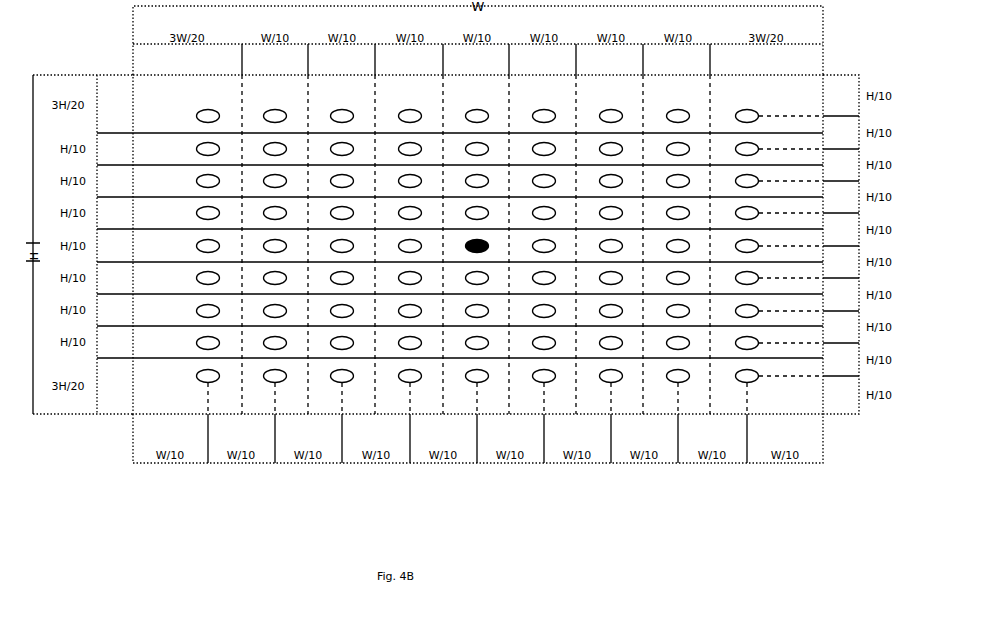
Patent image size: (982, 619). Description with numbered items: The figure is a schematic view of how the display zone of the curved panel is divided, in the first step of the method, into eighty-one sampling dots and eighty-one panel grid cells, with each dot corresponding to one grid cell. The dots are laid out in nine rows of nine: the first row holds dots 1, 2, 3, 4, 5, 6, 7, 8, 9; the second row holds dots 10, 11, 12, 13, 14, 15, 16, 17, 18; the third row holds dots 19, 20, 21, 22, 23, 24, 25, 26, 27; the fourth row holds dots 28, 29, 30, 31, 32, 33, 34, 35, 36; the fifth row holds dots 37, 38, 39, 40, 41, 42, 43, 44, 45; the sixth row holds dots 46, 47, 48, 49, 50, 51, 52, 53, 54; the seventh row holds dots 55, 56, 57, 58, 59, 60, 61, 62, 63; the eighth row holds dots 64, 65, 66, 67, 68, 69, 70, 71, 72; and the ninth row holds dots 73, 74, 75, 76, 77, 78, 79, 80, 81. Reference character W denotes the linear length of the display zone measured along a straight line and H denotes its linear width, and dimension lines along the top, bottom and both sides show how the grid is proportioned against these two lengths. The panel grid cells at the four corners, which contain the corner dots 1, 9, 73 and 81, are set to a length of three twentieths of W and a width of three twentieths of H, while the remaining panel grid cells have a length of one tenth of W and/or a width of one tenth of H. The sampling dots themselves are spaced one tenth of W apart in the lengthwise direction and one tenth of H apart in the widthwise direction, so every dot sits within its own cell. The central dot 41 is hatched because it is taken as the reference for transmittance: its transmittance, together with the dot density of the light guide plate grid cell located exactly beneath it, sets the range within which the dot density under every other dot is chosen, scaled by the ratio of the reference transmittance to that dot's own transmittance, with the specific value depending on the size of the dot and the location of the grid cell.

The dot 1 is at (178, 99).
The dot 2 is at (266, 99).
The dot 3 is at (333, 99).
The dot 4 is at (400, 99).
The dot 5 is at (468, 99).
The dot 6 is at (534, 99).
The dot 7 is at (601, 99).
The dot 8 is at (668, 99).
The dot 9 is at (736, 99).
The dot 10 is at (178, 145).
The dot 11 is at (266, 145).
The dot 12 is at (333, 145).
The dot 13 is at (400, 145).
The dot 14 is at (468, 145).
The dot 15 is at (534, 145).
The dot 16 is at (601, 145).
The dot 17 is at (668, 145).
The dot 18 is at (736, 145).
The dot 19 is at (178, 177).
The dot 20 is at (266, 177).
The dot 21 is at (333, 177).
The dot 22 is at (400, 177).
The dot 23 is at (468, 177).
The dot 24 is at (534, 177).
The dot 25 is at (601, 177).
The dot 26 is at (668, 177).
The dot 27 is at (736, 177).
The dot 28 is at (178, 209).
The dot 29 is at (266, 209).
The dot 30 is at (333, 209).
The dot 31 is at (400, 209).
The dot 32 is at (468, 209).
The dot 33 is at (534, 209).
The dot 34 is at (601, 209).
The dot 35 is at (668, 209).
The dot 36 is at (736, 209).
The dot 37 is at (178, 241).
The dot 38 is at (266, 241).
The dot 39 is at (333, 241).
The dot 40 is at (400, 241).
The central dot 41 is at (468, 241).
The dot 42 is at (534, 241).
The dot 43 is at (601, 241).
The dot 44 is at (668, 241).
The dot 45 is at (736, 241).
The dot 46 is at (178, 274).
The dot 47 is at (266, 274).
The dot 48 is at (333, 274).
The dot 49 is at (400, 274).
The dot 50 is at (468, 274).
The dot 51 is at (534, 274).
The dot 52 is at (601, 274).
The dot 53 is at (668, 274).
The dot 54 is at (736, 274).
The dot 55 is at (178, 306).
The dot 56 is at (266, 306).
The dot 57 is at (333, 306).
The dot 58 is at (400, 306).
The dot 59 is at (468, 306).
The dot 60 is at (534, 306).
The dot 61 is at (601, 306).
The dot 62 is at (668, 306).
The dot 63 is at (736, 306).
The dot 64 is at (178, 338).
The dot 65 is at (266, 338).
The dot 66 is at (333, 338).
The dot 67 is at (400, 338).
The dot 68 is at (468, 338).
The dot 69 is at (534, 338).
The dot 70 is at (601, 338).
The dot 71 is at (668, 338).
The dot 72 is at (736, 338).
The dot 73 is at (178, 371).
The dot 74 is at (266, 371).
The dot 75 is at (333, 371).
The dot 76 is at (400, 371).
The dot 77 is at (468, 371).
The dot 78 is at (534, 371).
The dot 79 is at (601, 371).
The dot 80 is at (668, 371).
The dot 81 is at (736, 371).